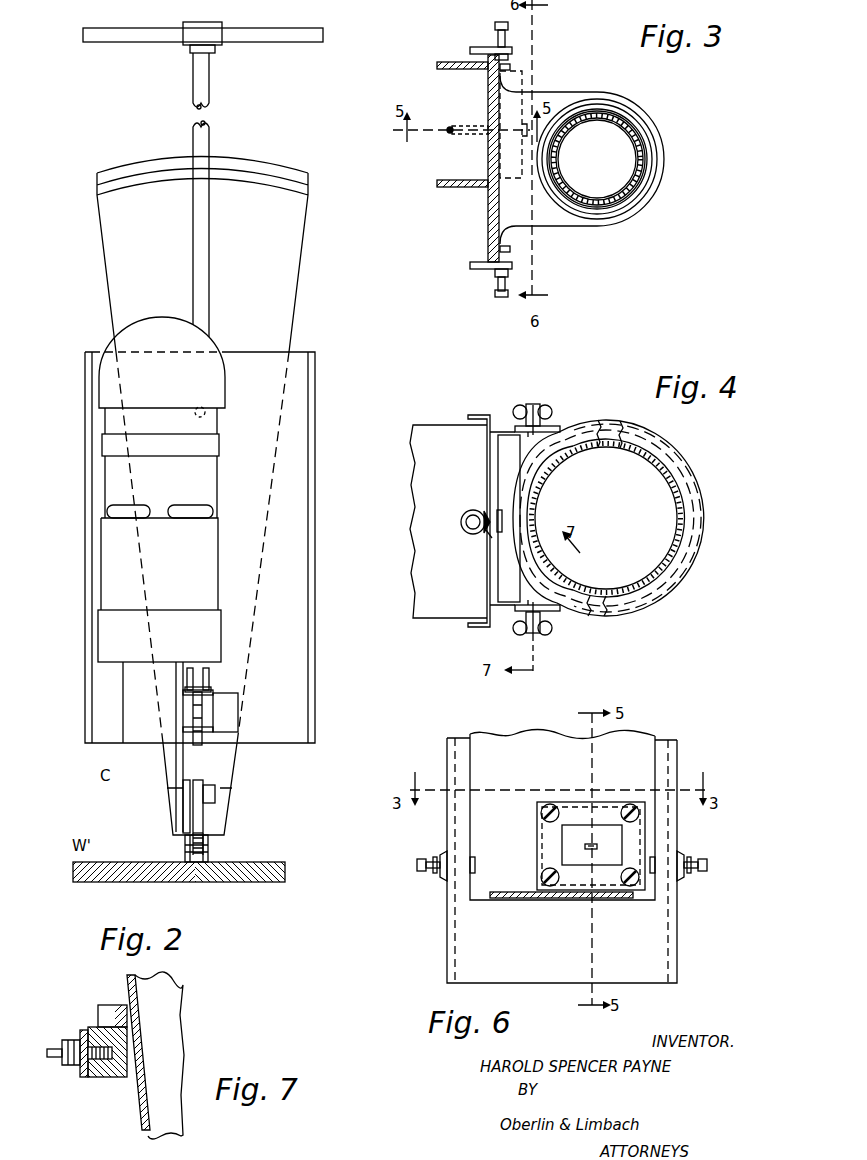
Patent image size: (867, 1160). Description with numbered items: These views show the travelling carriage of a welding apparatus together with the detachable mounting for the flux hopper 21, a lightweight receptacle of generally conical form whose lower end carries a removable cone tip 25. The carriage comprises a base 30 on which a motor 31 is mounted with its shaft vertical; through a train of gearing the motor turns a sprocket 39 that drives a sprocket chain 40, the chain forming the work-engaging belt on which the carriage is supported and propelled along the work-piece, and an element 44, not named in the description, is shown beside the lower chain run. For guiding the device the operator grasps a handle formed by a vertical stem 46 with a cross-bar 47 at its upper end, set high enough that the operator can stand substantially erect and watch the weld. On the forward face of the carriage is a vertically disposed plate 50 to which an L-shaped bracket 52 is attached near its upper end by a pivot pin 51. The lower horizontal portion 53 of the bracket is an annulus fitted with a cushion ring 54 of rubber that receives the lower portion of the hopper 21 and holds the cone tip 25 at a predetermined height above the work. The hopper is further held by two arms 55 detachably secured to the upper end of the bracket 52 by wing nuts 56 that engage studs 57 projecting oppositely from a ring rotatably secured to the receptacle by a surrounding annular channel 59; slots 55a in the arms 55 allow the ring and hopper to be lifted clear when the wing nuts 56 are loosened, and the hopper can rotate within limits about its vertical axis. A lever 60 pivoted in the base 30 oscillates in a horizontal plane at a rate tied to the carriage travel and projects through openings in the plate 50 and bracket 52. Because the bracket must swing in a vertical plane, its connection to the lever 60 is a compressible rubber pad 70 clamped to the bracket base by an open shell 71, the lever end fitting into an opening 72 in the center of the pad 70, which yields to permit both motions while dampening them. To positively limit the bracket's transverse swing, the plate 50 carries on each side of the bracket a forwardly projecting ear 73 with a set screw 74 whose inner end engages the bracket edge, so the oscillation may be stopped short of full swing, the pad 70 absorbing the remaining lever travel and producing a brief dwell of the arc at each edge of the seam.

In FIG. 2, the hopper 21 is at (100, 240).
In FIG. 3, the hopper 21 is at (615, 130).
In FIG. 4, the hopper 21 is at (667, 480).
In FIG. 7, the hopper 21 is at (128, 983).
In FIG. 2, the cone tip 25 is at (165, 806).
In FIG. 2, the base 30 is at (98, 632).
In FIG. 3, the base 30 is at (440, 66).
In FIG. 4, the base 30 is at (421, 432).
In FIG. 2, the motor 31 is at (105, 418).
In FIG. 2, the sprocket 39 is at (195, 714).
In FIG. 2, the sprocket chain 40 is at (187, 682).
In FIG. 2, the nut 44 is at (216, 798).
In FIG. 2, the vertical stem 46 is at (192, 126).
In FIG. 4, the vertical stem 46 is at (461, 523).
In FIG. 2, the cross-bar 47 is at (120, 42).
In FIG. 2, the plate 50 is at (88, 470).
In FIG. 3, the plate 50 is at (488, 215).
In FIG. 4, the plate 50 is at (487, 446).
In FIG. 4, the pivot pin 51 is at (488, 535).
In FIG. 4, the L-shaped bracket 52 is at (497, 468).
In FIG. 6, the L-shaped bracket 52 is at (452, 943).
In FIG. 3, the lower horizontal portion 53 is at (565, 228).
In FIG. 6, the lower horizontal portion 53 is at (525, 900).
In FIG. 3, the cushion ring 54 is at (645, 180).
In FIG. 4, the arms 55 is at (558, 427).
In FIG. 7, the arms 55 is at (84, 1078).
In FIG. 4, the slots 55a is at (535, 434).
In FIG. 4, the wing nuts 56 is at (516, 409).
In FIG. 7, the wing nuts 56 is at (67, 1043).
In FIG. 4, the studs 57 is at (534, 405).
In FIG. 7, the studs 57 is at (88, 1031).
In FIG. 4, the annular channel 59 is at (705, 517).
In FIG. 7, the annular channel 59 is at (113, 1010).
In FIG. 3, the lever 60 is at (458, 118).
In FIG. 6, the lever 60 is at (594, 843).
In FIG. 6, the pad 70 is at (567, 848).
In FIG. 3, the open shell 71 is at (528, 86).
In FIG. 6, the open shell 71 is at (537, 829).
In FIG. 6, the opening 72 is at (590, 843).
In FIG. 3, the ear 73 is at (480, 48).
In FIG. 6, the ear 73 is at (440, 875).
In FIG. 3, the set screw 74 is at (495, 26).
In FIG. 6, the set screw 74 is at (418, 858).